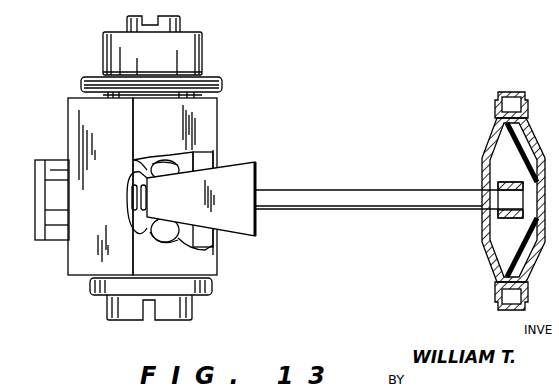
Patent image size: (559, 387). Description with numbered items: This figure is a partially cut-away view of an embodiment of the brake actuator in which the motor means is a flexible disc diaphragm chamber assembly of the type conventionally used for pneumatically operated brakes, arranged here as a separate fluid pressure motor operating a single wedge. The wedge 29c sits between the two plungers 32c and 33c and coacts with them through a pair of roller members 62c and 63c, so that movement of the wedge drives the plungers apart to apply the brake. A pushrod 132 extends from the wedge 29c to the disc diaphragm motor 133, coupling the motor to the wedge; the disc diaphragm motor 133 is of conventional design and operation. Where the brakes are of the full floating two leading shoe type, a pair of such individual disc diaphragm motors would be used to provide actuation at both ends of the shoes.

The wedge 29c is at (255, 163).
The plunger 32c is at (145, 165).
The plunger 33c is at (187, 243).
The roller member 62c is at (178, 140).
The roller member 63c is at (166, 226).
The pushrod 132 is at (328, 190).
The disc diaphragm motor 133 is at (482, 134).